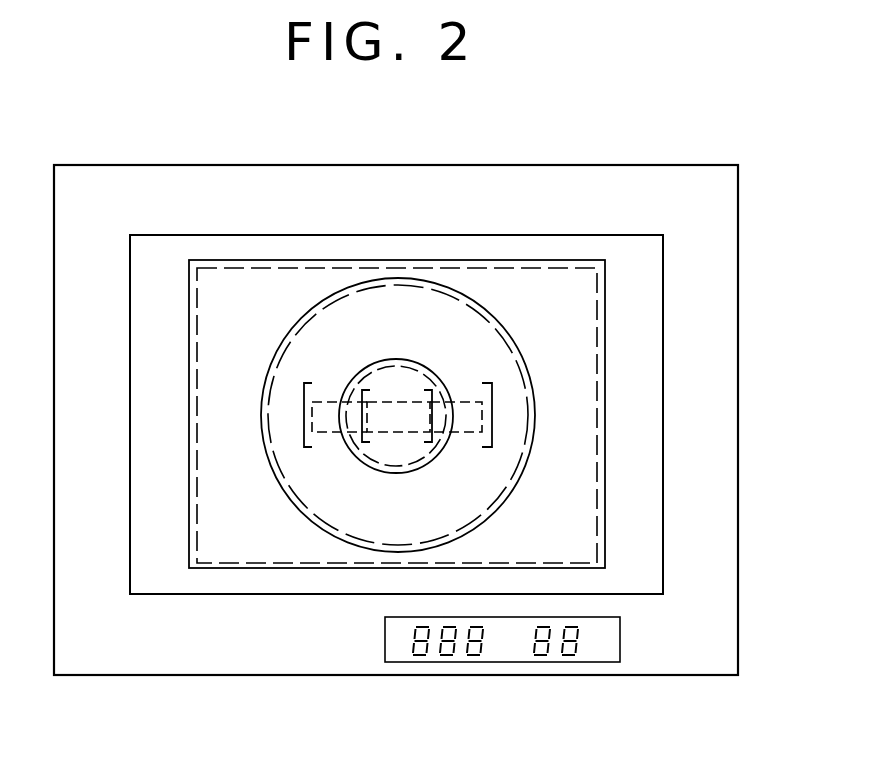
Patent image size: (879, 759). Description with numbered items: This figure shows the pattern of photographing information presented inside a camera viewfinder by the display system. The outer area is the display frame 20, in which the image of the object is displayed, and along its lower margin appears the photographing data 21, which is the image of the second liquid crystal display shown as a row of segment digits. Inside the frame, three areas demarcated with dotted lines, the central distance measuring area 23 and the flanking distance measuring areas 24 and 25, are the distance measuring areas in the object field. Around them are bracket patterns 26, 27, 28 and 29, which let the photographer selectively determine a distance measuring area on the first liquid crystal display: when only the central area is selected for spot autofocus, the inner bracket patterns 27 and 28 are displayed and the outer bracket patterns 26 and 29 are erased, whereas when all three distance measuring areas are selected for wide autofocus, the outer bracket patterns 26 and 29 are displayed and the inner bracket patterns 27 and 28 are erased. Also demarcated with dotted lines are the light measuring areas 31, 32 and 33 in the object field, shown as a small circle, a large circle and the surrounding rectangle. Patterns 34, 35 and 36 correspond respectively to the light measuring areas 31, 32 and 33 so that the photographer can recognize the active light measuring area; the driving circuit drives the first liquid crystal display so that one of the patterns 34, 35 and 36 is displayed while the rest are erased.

The display frame 20 is at (690, 352).
The photographing data 21 is at (605, 662).
The central distance measuring area 23 is at (390, 400).
The distance measuring area 24 is at (328, 400).
The distance measuring area 25 is at (463, 400).
The bracket pattern 26 is at (310, 383).
The bracket pattern 27 is at (362, 392).
The bracket pattern 28 is at (432, 392).
The bracket pattern 29 is at (490, 383).
The light measuring area 31 is at (353, 458).
The light measuring area 32 is at (275, 468).
The light measuring area 33 is at (197, 383).
The pattern 34 is at (400, 471).
The pattern 35 is at (284, 490).
The pattern 36 is at (189, 448).